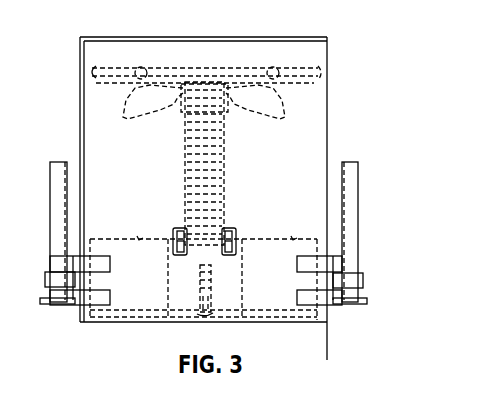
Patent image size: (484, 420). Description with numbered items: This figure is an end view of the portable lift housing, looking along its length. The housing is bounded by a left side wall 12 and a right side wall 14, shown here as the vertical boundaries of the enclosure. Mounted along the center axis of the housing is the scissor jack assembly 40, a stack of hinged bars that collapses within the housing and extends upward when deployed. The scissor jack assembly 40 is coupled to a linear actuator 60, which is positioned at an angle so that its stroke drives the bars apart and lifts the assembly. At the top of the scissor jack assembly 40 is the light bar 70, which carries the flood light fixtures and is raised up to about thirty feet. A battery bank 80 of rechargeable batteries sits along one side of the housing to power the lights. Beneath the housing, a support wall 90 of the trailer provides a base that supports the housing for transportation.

The left side wall 12 is at (80, 112).
The right side wall 14 is at (327, 114).
The light bar 70 is at (303, 73).
The scissor jack assembly 40 is at (224, 175).
The linear actuator 60 is at (212, 292).
The battery bank 80 is at (295, 308).
The support wall 90 is at (105, 314).